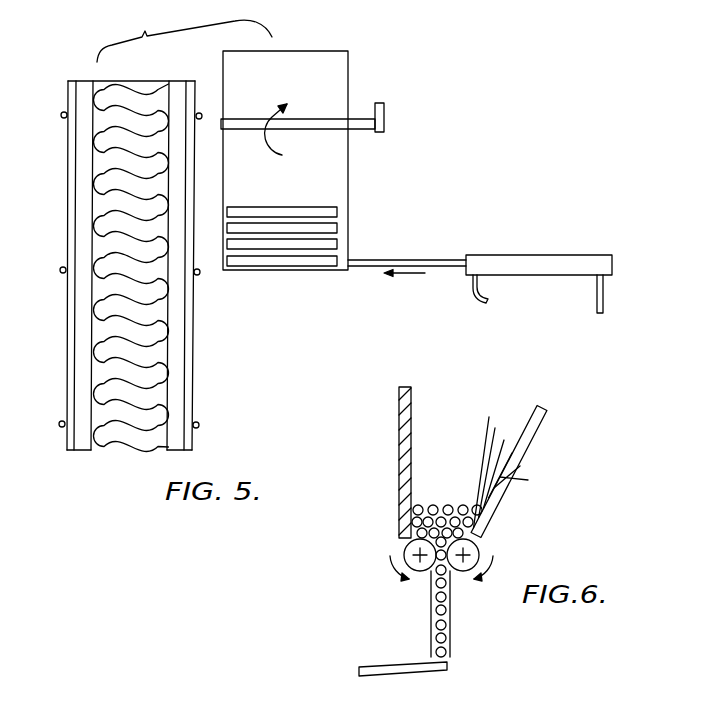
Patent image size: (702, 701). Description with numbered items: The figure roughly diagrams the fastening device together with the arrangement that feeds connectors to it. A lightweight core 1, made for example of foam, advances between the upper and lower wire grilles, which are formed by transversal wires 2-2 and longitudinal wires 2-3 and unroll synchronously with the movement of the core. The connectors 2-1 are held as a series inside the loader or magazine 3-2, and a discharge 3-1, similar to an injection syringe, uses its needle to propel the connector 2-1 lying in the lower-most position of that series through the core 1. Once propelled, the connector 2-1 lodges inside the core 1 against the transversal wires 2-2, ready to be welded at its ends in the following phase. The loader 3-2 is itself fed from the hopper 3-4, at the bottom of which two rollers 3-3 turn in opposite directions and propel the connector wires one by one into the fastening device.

In FIG. 5, the lightweight core 1 is at (116, 438).
In FIG. 5, the connector 2-1 is at (333, 248).
In FIG. 6, the connector 2-1 is at (449, 638).
In FIG. 5, the transversal wire 2-2 is at (62, 114).
In FIG. 5, the longitudinal wire 2-3 is at (67, 397).
In FIG. 5, the discharge 3-1 is at (578, 262).
In FIG. 5, the loader or magazine 3-2 is at (338, 164).
In FIG. 6, the loader or magazine 3-2 is at (432, 615).
In FIG. 6, the roller 3-3 is at (483, 545).
In FIG. 5, the hopper 3-4 is at (340, 74).
In FIG. 6, the hopper 3-4 is at (512, 478).